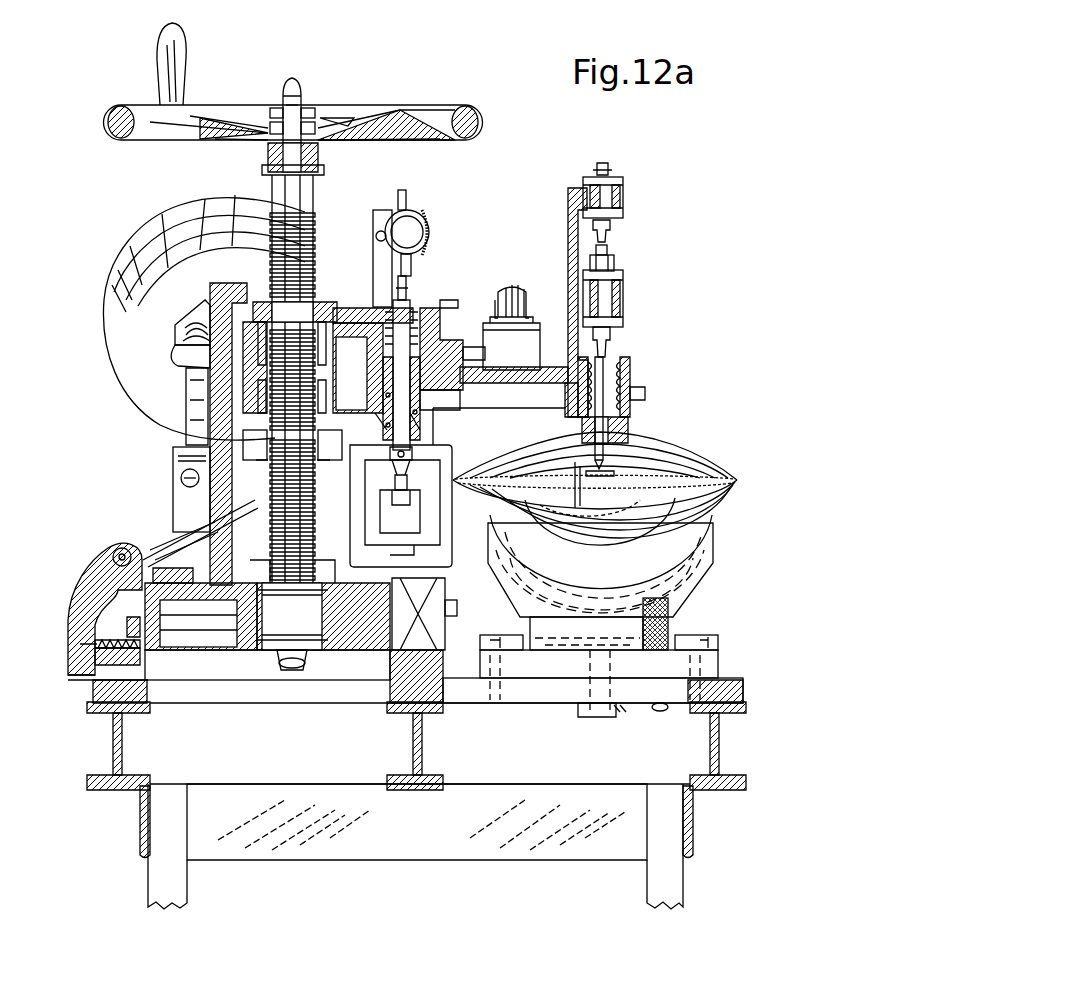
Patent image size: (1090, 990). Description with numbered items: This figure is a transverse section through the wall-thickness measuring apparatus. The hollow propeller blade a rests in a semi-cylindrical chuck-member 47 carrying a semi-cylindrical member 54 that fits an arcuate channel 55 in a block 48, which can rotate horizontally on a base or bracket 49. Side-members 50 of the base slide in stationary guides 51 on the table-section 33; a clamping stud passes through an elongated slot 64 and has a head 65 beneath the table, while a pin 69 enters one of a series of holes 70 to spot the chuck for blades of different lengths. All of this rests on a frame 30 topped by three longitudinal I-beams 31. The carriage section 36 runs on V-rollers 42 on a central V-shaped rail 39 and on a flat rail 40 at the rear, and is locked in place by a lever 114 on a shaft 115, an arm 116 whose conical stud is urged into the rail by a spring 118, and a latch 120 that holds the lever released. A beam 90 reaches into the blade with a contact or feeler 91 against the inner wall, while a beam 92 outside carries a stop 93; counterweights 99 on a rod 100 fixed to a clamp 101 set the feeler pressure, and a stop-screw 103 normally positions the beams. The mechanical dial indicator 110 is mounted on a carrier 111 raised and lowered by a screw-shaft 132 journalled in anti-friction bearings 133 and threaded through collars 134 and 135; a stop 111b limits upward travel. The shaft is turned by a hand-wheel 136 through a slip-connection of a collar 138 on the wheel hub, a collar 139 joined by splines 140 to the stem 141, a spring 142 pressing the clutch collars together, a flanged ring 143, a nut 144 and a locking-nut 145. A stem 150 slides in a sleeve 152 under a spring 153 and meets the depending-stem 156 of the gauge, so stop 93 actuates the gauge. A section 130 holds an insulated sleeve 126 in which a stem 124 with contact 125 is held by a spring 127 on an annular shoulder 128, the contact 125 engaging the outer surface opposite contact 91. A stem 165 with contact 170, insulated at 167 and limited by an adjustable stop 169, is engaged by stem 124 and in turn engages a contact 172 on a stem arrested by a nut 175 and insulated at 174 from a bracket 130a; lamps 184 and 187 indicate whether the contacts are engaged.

The hand-wheel 136 is at (412, 122).
The locking-nut 145 is at (290, 80).
The nut 144 is at (298, 105).
The flanged ring 143 is at (310, 110).
The spring 142 is at (312, 126).
The stem 141 is at (276, 110).
The splines 140 is at (272, 125).
The collar 139 is at (340, 128).
The collar 138 is at (268, 160).
The screw-shaft 132 is at (302, 208).
The mechanical dial indicator 110 is at (405, 226).
The counterweights 99 is at (140, 306).
The rod 100 is at (186, 346).
The stop-screw 103 is at (180, 379).
The stop 111b is at (222, 418).
The collar 135 is at (186, 426).
The clamp 101 is at (185, 465).
The latch 120 is at (238, 512).
The lever 114 is at (165, 538).
The shaft 115 is at (115, 548).
The arm 116 is at (84, 588).
The spring 118 is at (80, 628).
The carriage section 36 is at (208, 650).
The flat rail 40 is at (145, 690).
The anti-friction bearings 133 is at (275, 655).
The V-shaped rail 39 is at (398, 670).
The V-rollers 42 is at (440, 604).
The collar 134 is at (318, 300).
The carrier 111 is at (350, 330).
The depending-stem 156 is at (408, 292).
The spring 153 is at (420, 325).
The stem 150 is at (445, 345).
The sleeve 152 is at (430, 420).
The section 130 is at (525, 408).
The stop 93 is at (410, 478).
The beam 92 is at (408, 507).
The bracket 130a is at (568, 248).
The lamp 184 is at (500, 312).
The lamp 187 is at (524, 305).
The nut 175 is at (606, 167).
The insulation 174 is at (614, 196).
The contact 172 is at (608, 233).
The stem 165 is at (608, 250).
The adjustable stop 169 is at (614, 263).
The insulation 167 is at (613, 300).
The contact 170 is at (608, 342).
The spring 127 is at (612, 368).
The annular shoulder 128 is at (630, 380).
The stem 124 is at (642, 394).
The sleeve 126 is at (625, 428).
The contact 125 is at (610, 447).
The contact 91 is at (618, 471).
The beam 90 is at (700, 462).
The semi-cylindrical member 54 is at (700, 498).
The semi-cylindrical chuck-member 47 is at (695, 515).
The block 48 is at (700, 534).
The arcuate channel 55 is at (700, 554).
The propeller blade a is at (568, 508).
The base or bracket 49 is at (625, 628).
The pin 69 is at (672, 616).
The stationary guides 51 is at (510, 640).
The side-members 50 is at (520, 680).
The table-section 33 is at (558, 705).
The head 65 is at (598, 717).
The elongated slot 64 is at (622, 712).
The holes 70 is at (678, 705).
The frame 30 is at (726, 738).
The longitudinal I-beams 31 is at (113, 752).